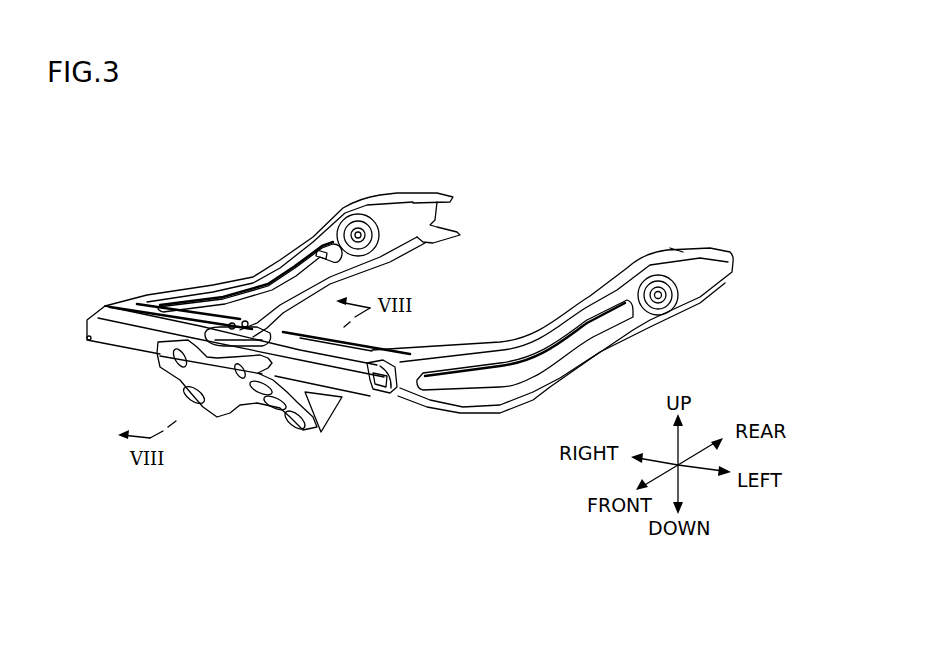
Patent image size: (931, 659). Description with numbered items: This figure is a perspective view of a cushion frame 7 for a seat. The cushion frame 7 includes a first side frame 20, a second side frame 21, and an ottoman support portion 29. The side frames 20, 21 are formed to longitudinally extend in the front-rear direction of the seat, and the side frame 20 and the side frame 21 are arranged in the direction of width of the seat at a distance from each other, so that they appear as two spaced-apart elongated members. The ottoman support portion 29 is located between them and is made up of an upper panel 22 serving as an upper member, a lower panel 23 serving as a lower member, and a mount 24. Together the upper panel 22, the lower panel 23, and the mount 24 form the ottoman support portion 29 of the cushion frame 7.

The cushion frame 7 is at (358, 148).
The side frame 20 is at (271, 276).
The side frame 21 is at (628, 270).
The upper panel 22 is at (309, 372).
The lower panel 23 is at (379, 390).
The mount 24 is at (275, 415).
The ottoman support portion 29 is at (356, 544).